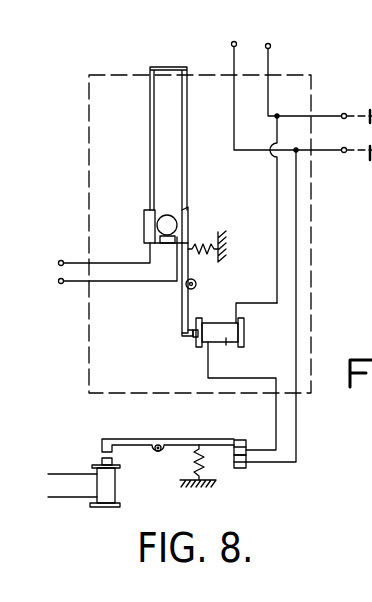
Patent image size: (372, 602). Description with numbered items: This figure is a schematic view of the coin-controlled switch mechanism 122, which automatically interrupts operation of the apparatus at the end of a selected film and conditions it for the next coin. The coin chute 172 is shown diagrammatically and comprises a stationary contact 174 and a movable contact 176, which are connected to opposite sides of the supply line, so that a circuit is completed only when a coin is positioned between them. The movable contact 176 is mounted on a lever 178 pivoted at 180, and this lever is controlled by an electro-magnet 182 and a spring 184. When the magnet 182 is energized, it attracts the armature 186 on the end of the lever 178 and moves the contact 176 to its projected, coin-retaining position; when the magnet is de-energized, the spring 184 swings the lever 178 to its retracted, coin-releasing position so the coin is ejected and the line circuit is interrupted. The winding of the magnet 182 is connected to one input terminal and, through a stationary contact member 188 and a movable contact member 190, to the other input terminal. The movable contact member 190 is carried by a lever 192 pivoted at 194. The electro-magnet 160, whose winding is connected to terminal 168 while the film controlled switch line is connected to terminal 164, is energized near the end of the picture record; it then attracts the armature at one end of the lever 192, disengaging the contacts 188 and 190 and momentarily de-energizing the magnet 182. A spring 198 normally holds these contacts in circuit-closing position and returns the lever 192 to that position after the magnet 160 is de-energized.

The coin-controlled switch mechanism 122 is at (89, 107).
The electro-magnet 160 is at (113, 480).
The terminal 164 is at (234, 41).
The terminal 168 is at (269, 43).
The coin chute 172 is at (150, 163).
The stationary contact 174 is at (150, 225).
The movable contact 176 is at (187, 222).
The lever 178 is at (184, 312).
The pivot 180 is at (197, 285).
The electro-magnet 182 is at (236, 376).
The spring 184 is at (204, 243).
The armature 186 is at (187, 334).
The stationary contact member 188 is at (246, 466).
The movable contact member 190 is at (238, 440).
The lever 192 is at (178, 441).
The pivot 194 is at (158, 451).
The spring 198 is at (207, 468).